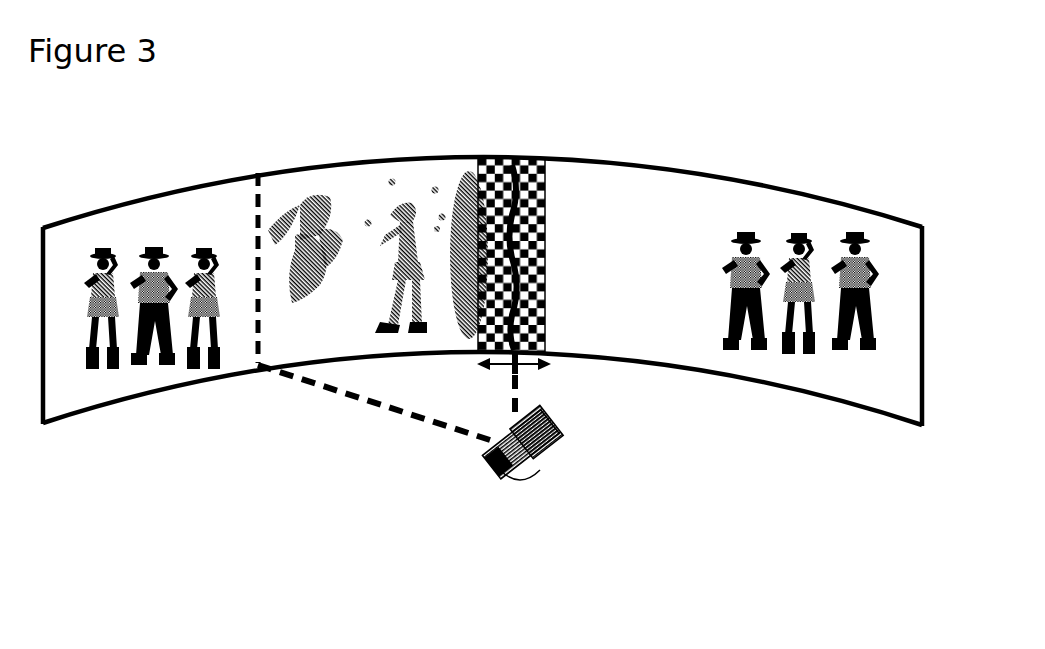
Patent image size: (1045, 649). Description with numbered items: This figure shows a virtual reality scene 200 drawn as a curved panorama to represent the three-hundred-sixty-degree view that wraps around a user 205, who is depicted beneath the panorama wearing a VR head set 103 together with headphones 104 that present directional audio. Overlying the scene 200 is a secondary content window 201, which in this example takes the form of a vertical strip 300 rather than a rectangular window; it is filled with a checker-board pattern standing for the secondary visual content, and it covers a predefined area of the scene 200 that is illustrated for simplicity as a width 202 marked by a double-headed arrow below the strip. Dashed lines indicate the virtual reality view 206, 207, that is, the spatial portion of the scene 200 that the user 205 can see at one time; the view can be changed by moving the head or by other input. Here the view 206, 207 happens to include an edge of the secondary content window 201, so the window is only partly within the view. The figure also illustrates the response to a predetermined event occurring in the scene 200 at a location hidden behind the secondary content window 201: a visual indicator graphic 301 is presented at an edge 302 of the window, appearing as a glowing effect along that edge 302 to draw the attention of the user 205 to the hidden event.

The scene 200 is at (228, 168).
The virtual reality view 206 is at (262, 200).
The secondary content window 201 is at (500, 157).
The edge of the secondary content window 302 is at (477, 250).
The visual indicator graphic 301 is at (462, 225).
The virtual reality view 207 is at (547, 163).
The strip 300 is at (548, 217).
The width 202 is at (527, 368).
The VR head set 103 is at (485, 440).
The headphones 104 is at (567, 440).
The user 205 is at (527, 457).